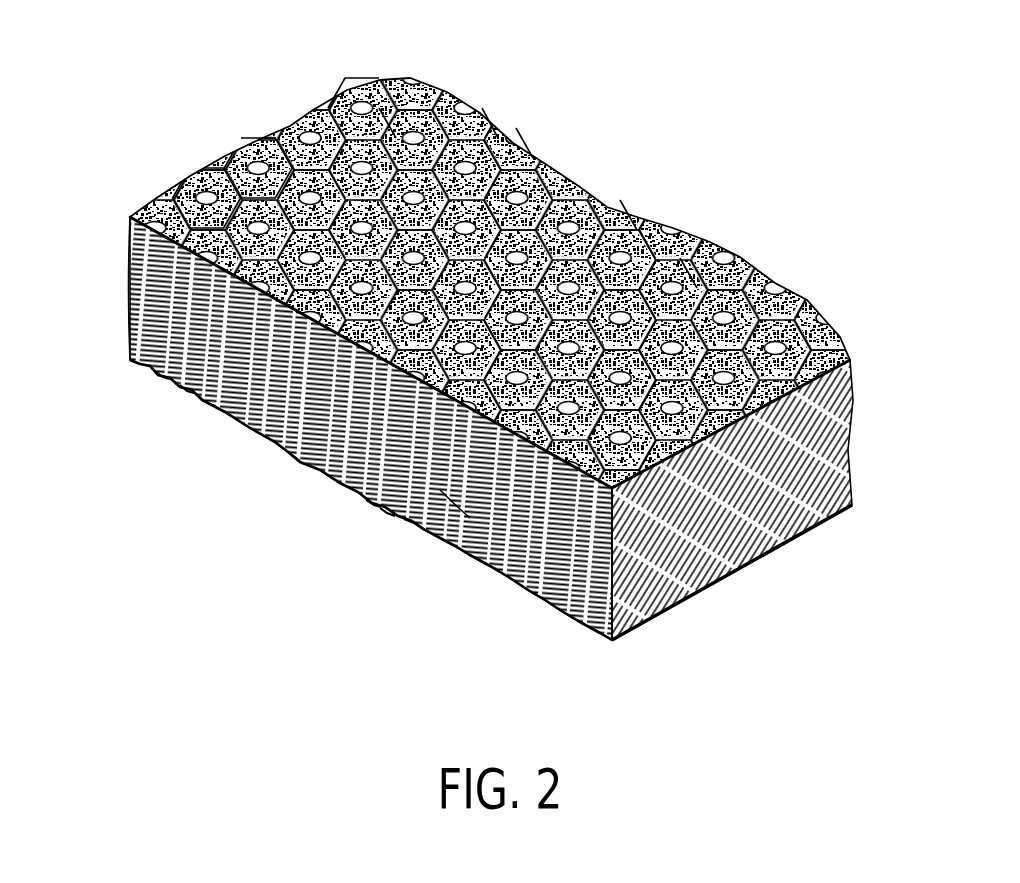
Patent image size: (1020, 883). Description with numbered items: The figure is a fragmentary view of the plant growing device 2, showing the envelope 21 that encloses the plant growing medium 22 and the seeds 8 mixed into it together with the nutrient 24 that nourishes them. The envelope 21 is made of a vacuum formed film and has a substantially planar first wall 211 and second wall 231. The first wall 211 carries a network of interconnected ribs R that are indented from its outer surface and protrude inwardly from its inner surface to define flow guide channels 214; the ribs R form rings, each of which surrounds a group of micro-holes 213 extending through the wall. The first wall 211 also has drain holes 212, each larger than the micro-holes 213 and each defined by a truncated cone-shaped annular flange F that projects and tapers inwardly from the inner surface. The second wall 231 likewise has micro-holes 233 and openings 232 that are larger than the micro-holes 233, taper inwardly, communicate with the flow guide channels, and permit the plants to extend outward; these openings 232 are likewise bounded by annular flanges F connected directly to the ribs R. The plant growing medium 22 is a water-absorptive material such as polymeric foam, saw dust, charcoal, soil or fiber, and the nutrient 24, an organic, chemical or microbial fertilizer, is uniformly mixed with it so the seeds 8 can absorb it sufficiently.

The plant growing device 2 is at (466, 362).
The seeds 8 is at (130, 313).
The envelope 21 is at (547, 617).
The plant growing medium 22 is at (520, 523).
The nutrient 24 is at (460, 510).
The first wall 211 is at (770, 263).
The drain holes 212 is at (200, 207).
The micro-holes 213 is at (523, 142).
The flow guide channels 214 is at (366, 103).
The second wall 231 is at (287, 452).
The openings 232 is at (203, 401).
The micro-holes 233 is at (186, 391).
The truncated cone-shaped annular flanges F is at (252, 140).
The interconnected ribs R is at (392, 118).